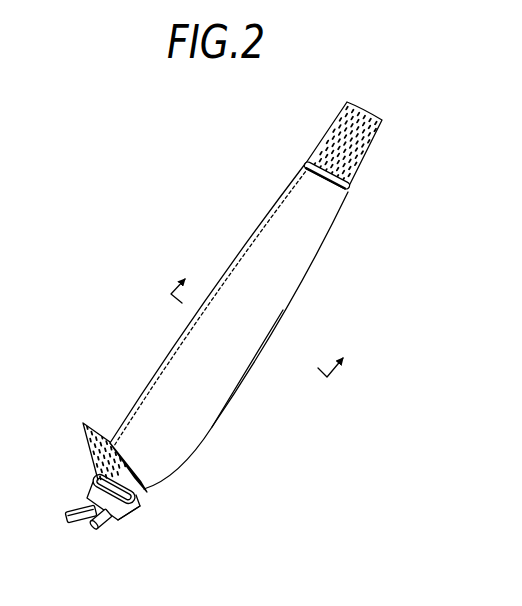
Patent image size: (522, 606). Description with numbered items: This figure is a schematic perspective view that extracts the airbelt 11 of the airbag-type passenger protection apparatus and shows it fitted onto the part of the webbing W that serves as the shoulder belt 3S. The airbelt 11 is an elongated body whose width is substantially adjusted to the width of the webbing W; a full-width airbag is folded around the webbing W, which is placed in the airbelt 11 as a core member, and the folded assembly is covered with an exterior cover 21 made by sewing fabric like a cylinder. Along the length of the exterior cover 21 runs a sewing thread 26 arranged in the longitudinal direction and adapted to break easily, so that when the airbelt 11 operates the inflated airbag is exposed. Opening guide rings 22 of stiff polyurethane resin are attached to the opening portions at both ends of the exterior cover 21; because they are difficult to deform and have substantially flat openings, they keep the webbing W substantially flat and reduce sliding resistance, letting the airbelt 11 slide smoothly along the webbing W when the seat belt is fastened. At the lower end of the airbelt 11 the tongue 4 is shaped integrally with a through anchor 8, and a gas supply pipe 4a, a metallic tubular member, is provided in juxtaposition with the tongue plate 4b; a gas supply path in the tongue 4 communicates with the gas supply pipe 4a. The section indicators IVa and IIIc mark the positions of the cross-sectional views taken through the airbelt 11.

The airbelt 11 is at (288, 306).
The exterior cover 21 is at (215, 387).
The sewing thread 26 is at (239, 249).
The shoulder belt 3S is at (366, 153).
The webbing W is at (86, 460).
The opening guide ring 22 is at (349, 188).
The through anchor 8 is at (141, 506).
The tongue 4 is at (121, 516).
The gas supply pipe 4a is at (105, 526).
The tongue plate 4b is at (68, 512).
The section view direction IVa is at (269, 314).
The section view direction IIIc is at (215, 412).